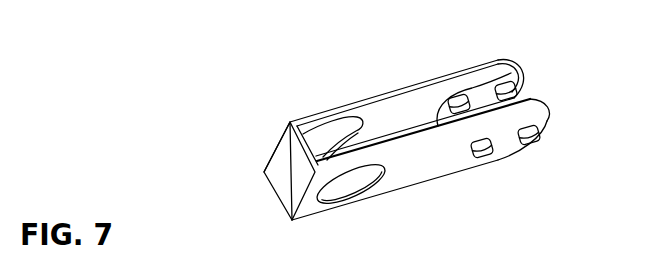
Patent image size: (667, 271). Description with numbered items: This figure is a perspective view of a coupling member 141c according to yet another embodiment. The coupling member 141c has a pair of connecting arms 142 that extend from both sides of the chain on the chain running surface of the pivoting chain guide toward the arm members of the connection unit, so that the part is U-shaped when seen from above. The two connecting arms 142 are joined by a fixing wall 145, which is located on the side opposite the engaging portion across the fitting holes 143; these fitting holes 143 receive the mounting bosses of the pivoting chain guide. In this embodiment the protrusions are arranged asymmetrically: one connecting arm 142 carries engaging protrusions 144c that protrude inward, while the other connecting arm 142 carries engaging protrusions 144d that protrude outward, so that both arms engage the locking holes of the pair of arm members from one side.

The coupling member 141c is at (266, 115).
The connecting arms 142 is at (437, 125).
The fitting holes 143 is at (332, 137).
The engaging protrusions 144c is at (517, 87).
The engaging protrusions 144d is at (503, 158).
The fixing wall 145 is at (288, 169).